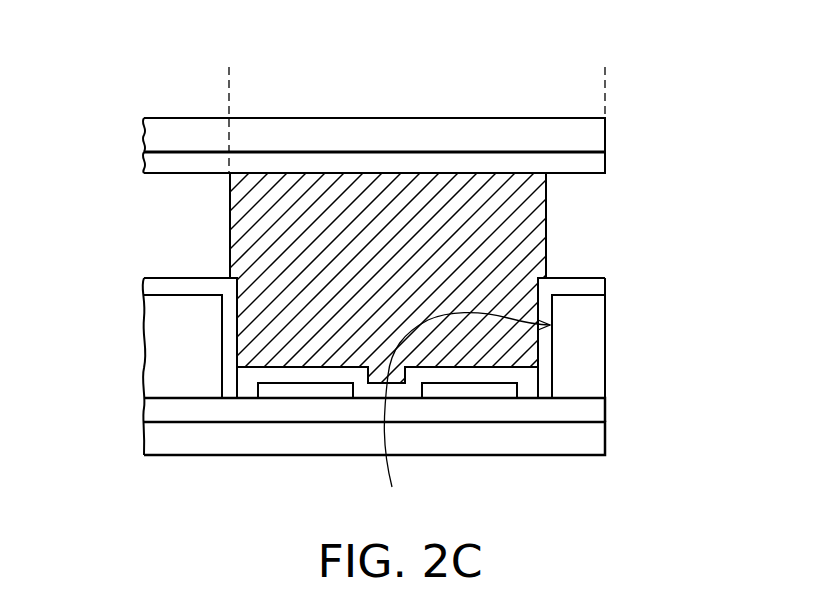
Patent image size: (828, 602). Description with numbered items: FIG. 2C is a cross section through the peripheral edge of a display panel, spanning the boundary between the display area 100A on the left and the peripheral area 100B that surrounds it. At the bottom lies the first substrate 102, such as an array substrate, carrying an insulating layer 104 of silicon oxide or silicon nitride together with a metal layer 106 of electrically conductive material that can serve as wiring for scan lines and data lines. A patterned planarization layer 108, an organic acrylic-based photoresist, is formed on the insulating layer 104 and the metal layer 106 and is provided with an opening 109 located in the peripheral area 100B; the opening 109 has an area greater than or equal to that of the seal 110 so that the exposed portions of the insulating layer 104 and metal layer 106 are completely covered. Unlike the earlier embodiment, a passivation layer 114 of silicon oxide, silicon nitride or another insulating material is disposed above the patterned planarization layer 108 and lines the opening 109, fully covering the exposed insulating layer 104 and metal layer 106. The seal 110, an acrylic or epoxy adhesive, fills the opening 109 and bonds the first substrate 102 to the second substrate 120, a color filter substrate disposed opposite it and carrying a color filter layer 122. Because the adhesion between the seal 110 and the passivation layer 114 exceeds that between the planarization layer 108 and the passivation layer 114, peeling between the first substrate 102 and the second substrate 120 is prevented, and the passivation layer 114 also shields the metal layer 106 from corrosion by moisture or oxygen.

The display area 100A is at (145, 61).
The peripheral area 100B is at (605, 61).
The first substrate 102 is at (595, 440).
The insulating layer 104 is at (595, 408).
The metal layer 106 is at (305, 392).
The patterned planarization layer 108 is at (153, 348).
The opening 109 is at (461, 418).
The seal 110 is at (522, 240).
The passivation layer 114 is at (593, 290).
The second substrate 120 is at (595, 137).
The color filter layer 122 is at (595, 164).